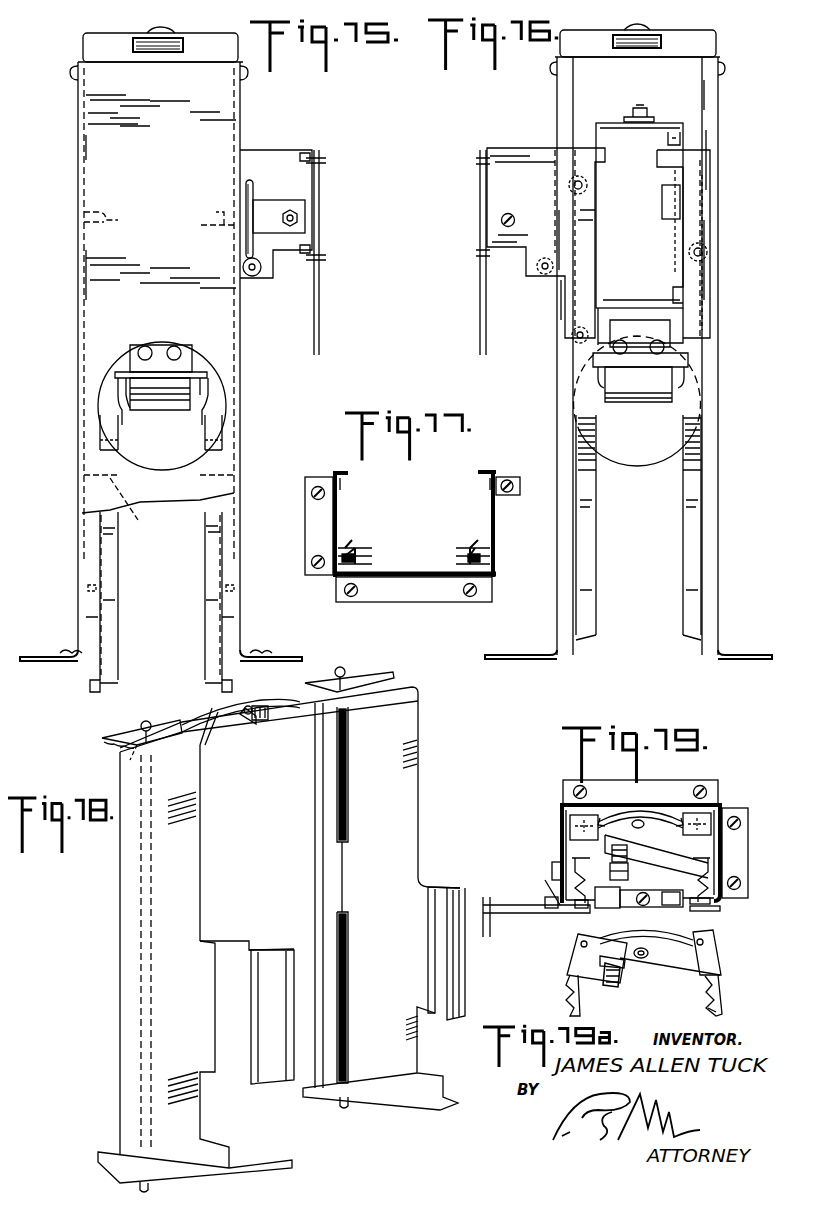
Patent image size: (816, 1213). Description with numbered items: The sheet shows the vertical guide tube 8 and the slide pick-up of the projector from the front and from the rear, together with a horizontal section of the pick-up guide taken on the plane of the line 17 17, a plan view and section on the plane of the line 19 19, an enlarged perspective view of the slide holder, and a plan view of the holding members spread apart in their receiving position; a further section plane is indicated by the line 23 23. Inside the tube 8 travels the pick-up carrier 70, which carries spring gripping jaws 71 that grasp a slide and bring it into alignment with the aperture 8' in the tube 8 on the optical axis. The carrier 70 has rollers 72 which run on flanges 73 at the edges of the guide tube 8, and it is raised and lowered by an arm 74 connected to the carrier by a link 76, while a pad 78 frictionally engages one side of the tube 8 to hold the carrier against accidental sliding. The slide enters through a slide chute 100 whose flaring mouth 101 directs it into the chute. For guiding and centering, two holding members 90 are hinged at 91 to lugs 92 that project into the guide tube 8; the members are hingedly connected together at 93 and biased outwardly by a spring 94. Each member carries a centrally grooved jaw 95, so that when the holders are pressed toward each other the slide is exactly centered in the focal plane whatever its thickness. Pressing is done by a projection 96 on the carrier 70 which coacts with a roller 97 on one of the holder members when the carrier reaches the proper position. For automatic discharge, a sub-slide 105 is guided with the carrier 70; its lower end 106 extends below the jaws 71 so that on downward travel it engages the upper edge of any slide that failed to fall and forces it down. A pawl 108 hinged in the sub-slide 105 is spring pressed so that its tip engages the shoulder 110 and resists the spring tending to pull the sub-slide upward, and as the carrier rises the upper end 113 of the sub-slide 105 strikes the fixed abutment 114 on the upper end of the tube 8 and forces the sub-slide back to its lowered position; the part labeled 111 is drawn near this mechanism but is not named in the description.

In FIG. 15, the guide tube 8 is at (161, 361).
In FIG. 17, the guide tube 8 is at (416, 537).
In FIG. 19, the guide tube 8 is at (669, 841).
In FIG. 15, the aperture 8' is at (129, 410).
In FIG. 16, the aperture 8' is at (670, 401).
In FIG. 15, the section line 17— 17 is at (62, 590).
In FIG. 16, the section line 19— 19 is at (536, 133).
In FIG. 16, the section line 23— 23 is at (667, 118).
In FIG. 15, the pick-up carrier 70 is at (292, 155).
In FIG. 16, the pick-up carrier 70 is at (516, 221).
In FIG. 19, the pick-up carrier 70 is at (555, 905).
In FIG. 15, the spring gripping jaws 71 is at (160, 402).
In FIG. 16, the spring gripping jaws 71 is at (640, 402).
In FIG. 16, the rollers 72 is at (568, 186).
In FIG. 19, the rollers 72 is at (700, 912).
In FIG. 16, the flanges 73 is at (566, 101).
In FIG. 17, the flanges 73 is at (341, 480).
In FIG. 19, the flanges 73 is at (553, 908).
In FIG. 15, the arm 74 is at (320, 287).
In FIG. 16, the arm 74 is at (480, 311).
In FIG. 15, the link 76 is at (319, 213).
In FIG. 16, the link 76 is at (480, 219).
In FIG. 15, the pad 78 is at (250, 185).
In FIG. 19, the pad 78 is at (552, 871).
In FIG. 16, the holding members 90 is at (685, 474).
In FIG. 18, the holding members 90 is at (182, 901).
In FIG. 19A, the holding members 90 is at (566, 998).
In FIG. 18, the hinge 91 is at (142, 724).
In FIG. 19A, the hinge 91 is at (578, 945).
In FIG. 15, the lugs 92 is at (82, 215).
In FIG. 18, the lugs 92 is at (140, 745).
In FIG. 19, the lugs 92 is at (572, 831).
In FIG. 18, the hinged connection 93 is at (252, 704).
In FIG. 19, the hinged connection 93 is at (642, 820).
In FIG. 19A, the hinged connection 93 is at (638, 958).
In FIG. 18, the spring 94 is at (214, 708).
In FIG. 19, the spring 94 is at (630, 815).
In FIG. 19A, the spring 94 is at (654, 946).
In FIG. 18, the centrally grooved jaw 95 is at (252, 946).
In FIG. 19, the centrally grooved jaw 95 is at (592, 879).
In FIG. 19A, the centrally grooved jaw 95 is at (708, 1008).
In FIG. 19, the projection 96 is at (629, 871).
In FIG. 18, the roller 97 is at (270, 722).
In FIG. 19, the roller 97 is at (628, 853).
In FIG. 19A, the roller 97 is at (606, 990).
In FIG. 15, the slide chute 100 is at (205, 642).
In FIG. 16, the slide chute 100 is at (690, 562).
In FIG. 17, the slide chute 100 is at (458, 554).
In FIG. 15, the flaring mouth 101 is at (222, 686).
In FIG. 17, the flaring mouth 101 is at (355, 545).
In FIG. 16, the sub-slide 105 is at (688, 128).
In FIG. 19, the sub-slide 105 is at (612, 906).
In FIG. 15, the lower end 106 is at (205, 393).
In FIG. 16, the lower end 106 is at (678, 388).
In FIG. 16, the pawl 108 is at (667, 137).
In FIG. 16, the shoulder 110 is at (660, 163).
In FIG. 16, the stop 111 is at (668, 200).
In FIG. 16, the upper end 113 is at (633, 111).
In FIG. 19, the upper end 113 is at (651, 905).
In FIG. 15, the fixed abutment 114 is at (183, 40).
In FIG. 16, the fixed abutment 114 is at (660, 42).